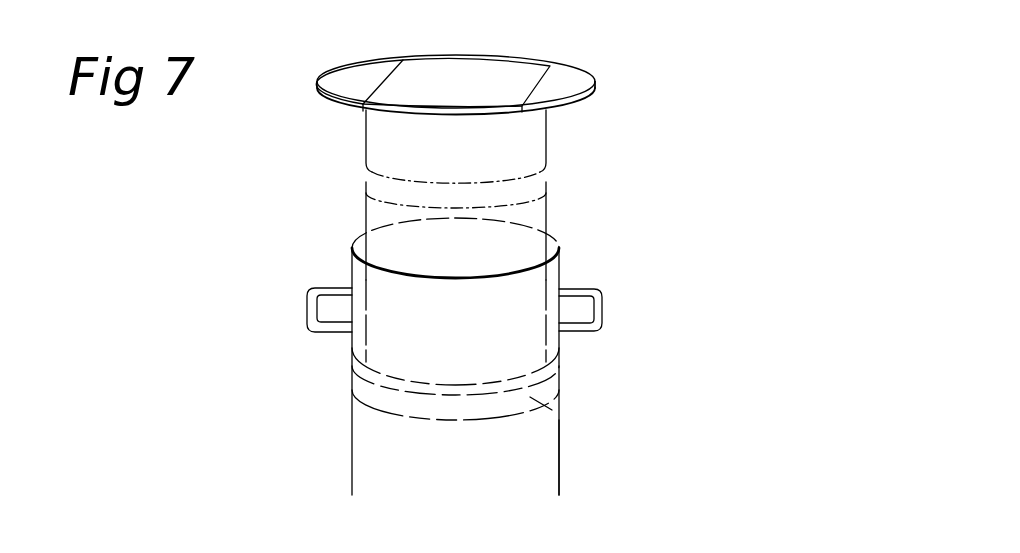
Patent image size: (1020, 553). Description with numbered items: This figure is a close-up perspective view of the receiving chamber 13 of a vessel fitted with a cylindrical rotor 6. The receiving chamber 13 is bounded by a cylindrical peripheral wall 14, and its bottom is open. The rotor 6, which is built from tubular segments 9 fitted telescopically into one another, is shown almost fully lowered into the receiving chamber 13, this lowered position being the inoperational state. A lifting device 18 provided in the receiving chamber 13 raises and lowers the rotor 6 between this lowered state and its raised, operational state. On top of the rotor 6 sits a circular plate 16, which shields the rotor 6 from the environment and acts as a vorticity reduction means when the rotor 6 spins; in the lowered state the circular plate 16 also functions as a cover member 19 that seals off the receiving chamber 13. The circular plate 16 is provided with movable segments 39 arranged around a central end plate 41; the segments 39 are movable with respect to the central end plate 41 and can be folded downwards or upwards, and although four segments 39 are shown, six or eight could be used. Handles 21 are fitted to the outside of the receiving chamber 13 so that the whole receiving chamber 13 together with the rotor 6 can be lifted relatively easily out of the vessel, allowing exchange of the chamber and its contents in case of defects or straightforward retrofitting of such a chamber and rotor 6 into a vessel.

The rotor 6 is at (340, 217).
The tubular segments 9 is at (513, 359).
The receiving chamber 13 is at (340, 447).
The cylindrical peripheral wall 14 is at (547, 445).
The circular plate 16 is at (571, 52).
The lifting device 18 is at (560, 413).
The cover member 19 is at (608, 87).
The handles 21 is at (308, 313).
The movable segments 39 is at (340, 82).
The central end plate 41 is at (500, 70).